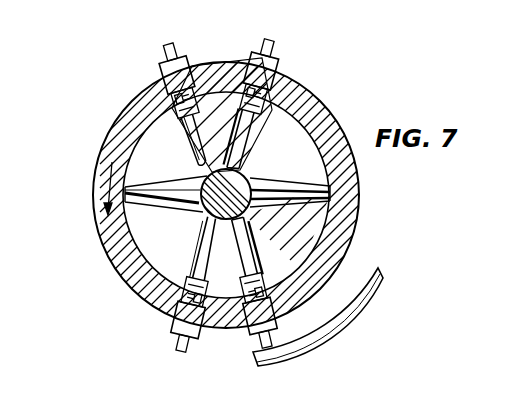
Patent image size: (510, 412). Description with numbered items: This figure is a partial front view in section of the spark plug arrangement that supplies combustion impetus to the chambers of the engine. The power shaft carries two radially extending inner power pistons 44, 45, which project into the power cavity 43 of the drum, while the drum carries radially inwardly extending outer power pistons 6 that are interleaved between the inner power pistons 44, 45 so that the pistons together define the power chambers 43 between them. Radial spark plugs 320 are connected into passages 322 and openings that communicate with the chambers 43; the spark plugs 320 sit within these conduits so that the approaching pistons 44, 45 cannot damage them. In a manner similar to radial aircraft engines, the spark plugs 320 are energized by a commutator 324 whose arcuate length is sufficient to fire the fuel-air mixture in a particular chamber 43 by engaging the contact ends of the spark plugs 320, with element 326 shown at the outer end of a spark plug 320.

The outer power piston 6 is at (323, 125).
The power cavity 43 is at (297, 152).
The inner power piston 44 is at (350, 188).
The inner power piston 45 is at (98, 250).
The radial spark plug 320 is at (268, 65).
The passage 322 is at (287, 100).
The commutator 324 is at (372, 285).
The holder shaft 326 is at (262, 45).